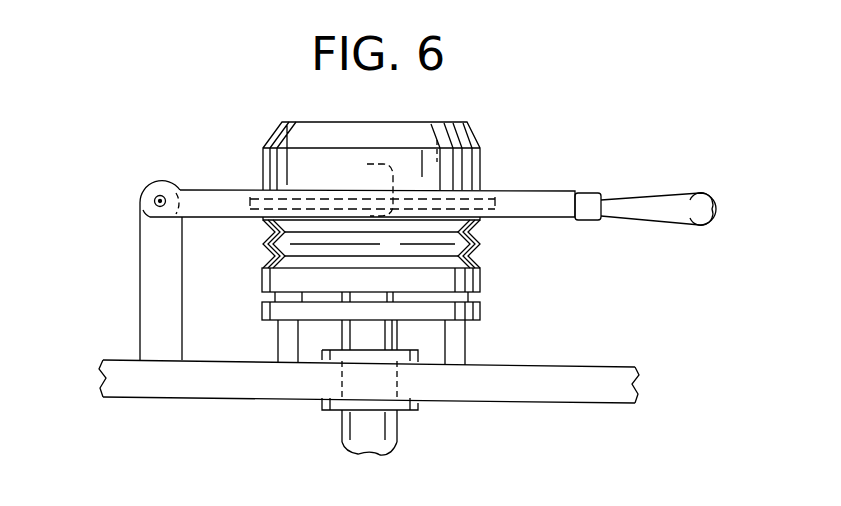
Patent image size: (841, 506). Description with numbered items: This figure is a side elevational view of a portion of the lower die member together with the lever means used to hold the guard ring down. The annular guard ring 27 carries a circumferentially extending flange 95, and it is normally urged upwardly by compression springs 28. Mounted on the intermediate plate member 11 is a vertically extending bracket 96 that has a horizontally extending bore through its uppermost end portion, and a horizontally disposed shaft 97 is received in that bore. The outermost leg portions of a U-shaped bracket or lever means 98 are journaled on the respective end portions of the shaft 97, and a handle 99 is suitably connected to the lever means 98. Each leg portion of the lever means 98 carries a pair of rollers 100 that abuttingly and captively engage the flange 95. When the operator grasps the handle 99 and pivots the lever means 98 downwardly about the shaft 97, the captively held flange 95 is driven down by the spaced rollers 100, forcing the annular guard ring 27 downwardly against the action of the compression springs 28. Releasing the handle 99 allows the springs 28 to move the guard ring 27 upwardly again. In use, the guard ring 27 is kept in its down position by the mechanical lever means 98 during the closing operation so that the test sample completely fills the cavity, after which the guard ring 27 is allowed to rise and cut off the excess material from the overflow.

The intermediate plate member 11 is at (225, 388).
The annular guard ring 27 is at (470, 176).
The compression springs 28 is at (482, 254).
The circumferentially extending flange 95 is at (252, 197).
The vertically extending bracket 96 is at (140, 300).
The shaft 97 is at (156, 198).
The U-shaped bracket or lever means 98 is at (553, 200).
The handle 99 is at (690, 212).
The rollers 100 is at (345, 186).